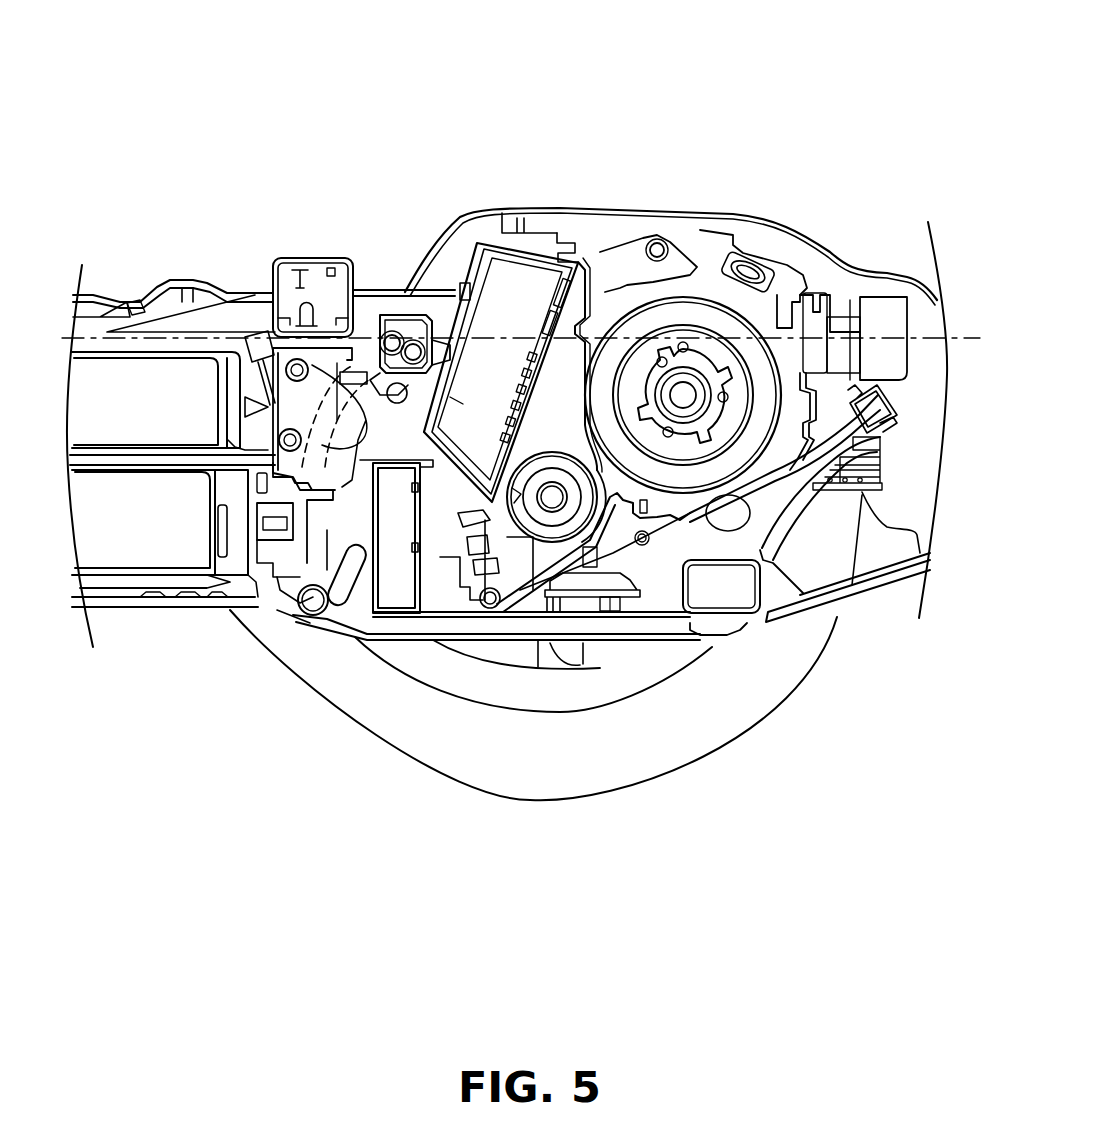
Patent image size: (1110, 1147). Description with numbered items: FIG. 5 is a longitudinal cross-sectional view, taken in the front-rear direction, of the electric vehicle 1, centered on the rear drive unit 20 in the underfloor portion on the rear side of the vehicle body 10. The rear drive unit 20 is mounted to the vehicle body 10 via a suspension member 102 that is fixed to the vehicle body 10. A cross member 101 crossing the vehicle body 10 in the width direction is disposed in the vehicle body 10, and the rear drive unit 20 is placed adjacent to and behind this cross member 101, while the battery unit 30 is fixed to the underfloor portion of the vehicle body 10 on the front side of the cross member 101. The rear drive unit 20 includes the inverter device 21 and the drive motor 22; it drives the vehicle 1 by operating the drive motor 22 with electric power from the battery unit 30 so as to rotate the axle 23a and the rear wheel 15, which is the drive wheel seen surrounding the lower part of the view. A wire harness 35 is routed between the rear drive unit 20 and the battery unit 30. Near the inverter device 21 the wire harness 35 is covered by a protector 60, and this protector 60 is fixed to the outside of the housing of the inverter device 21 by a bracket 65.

The electric vehicle 1 is at (806, 112).
The vehicle body 10 is at (148, 283).
The cross member 101 is at (288, 255).
The suspension member 102 is at (668, 632).
The rear wheel 15 is at (750, 706).
The rear drive unit 20 is at (600, 204).
The inverter device 21 is at (497, 243).
The drive motor 22 is at (706, 283).
The axle 23a is at (565, 492).
The battery unit 30 is at (157, 552).
The wire harness 35 is at (417, 325).
The protector 60 is at (388, 300).
The bracket 65 is at (462, 286).